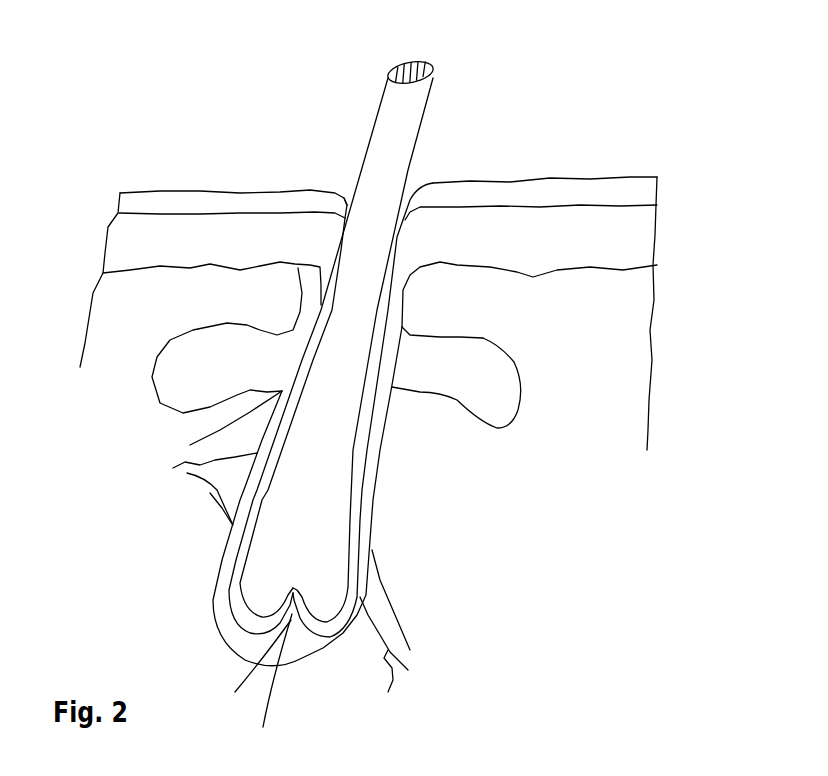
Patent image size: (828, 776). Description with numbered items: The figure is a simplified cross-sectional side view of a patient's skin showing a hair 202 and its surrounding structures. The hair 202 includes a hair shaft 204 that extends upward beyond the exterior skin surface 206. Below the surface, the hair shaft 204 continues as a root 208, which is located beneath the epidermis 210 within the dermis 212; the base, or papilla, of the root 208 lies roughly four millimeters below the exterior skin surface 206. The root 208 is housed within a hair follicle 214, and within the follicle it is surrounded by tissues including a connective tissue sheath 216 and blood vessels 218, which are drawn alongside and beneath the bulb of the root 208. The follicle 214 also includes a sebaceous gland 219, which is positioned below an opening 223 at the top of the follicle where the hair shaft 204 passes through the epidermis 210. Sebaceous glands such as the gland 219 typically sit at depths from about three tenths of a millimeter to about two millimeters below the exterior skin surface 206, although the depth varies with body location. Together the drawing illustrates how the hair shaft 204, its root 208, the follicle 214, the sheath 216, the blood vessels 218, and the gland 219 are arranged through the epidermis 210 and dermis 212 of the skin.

The hair 202 is at (487, 114).
The hair shaft 204 is at (392, 132).
The exterior skin surface 206 is at (512, 186).
The root 208 is at (318, 484).
The epidermis 210 is at (674, 177).
The dermis 212 is at (627, 370).
The hair follicle 214 is at (370, 441).
The connective tissue sheath 216 is at (370, 540).
The blood vessels 218 is at (210, 494).
The sebaceous gland 219 is at (472, 345).
The opening 223 is at (342, 182).